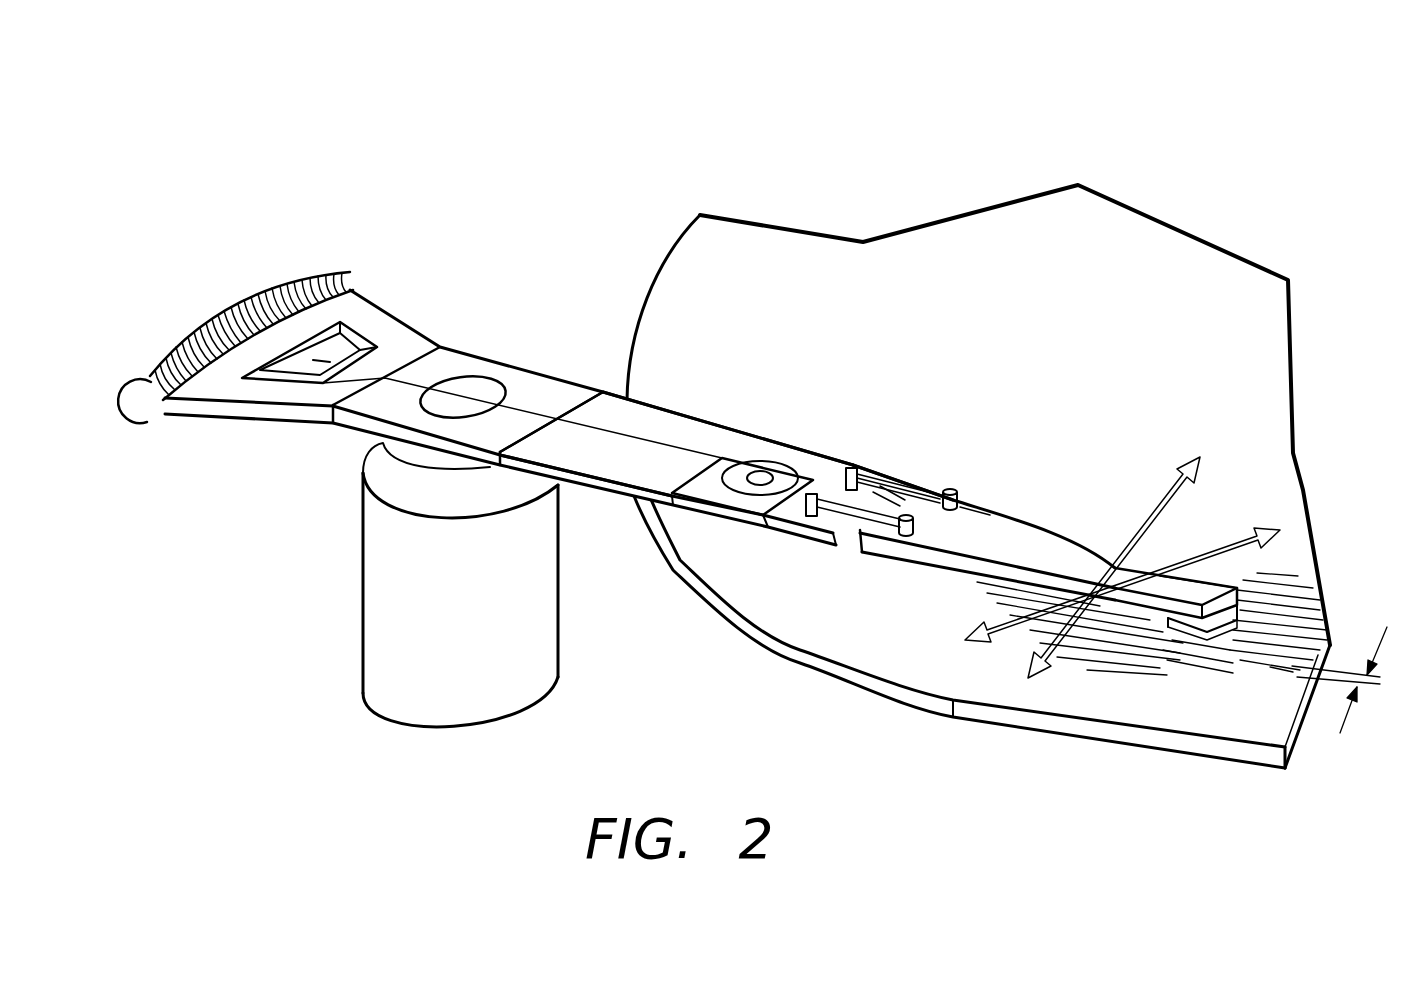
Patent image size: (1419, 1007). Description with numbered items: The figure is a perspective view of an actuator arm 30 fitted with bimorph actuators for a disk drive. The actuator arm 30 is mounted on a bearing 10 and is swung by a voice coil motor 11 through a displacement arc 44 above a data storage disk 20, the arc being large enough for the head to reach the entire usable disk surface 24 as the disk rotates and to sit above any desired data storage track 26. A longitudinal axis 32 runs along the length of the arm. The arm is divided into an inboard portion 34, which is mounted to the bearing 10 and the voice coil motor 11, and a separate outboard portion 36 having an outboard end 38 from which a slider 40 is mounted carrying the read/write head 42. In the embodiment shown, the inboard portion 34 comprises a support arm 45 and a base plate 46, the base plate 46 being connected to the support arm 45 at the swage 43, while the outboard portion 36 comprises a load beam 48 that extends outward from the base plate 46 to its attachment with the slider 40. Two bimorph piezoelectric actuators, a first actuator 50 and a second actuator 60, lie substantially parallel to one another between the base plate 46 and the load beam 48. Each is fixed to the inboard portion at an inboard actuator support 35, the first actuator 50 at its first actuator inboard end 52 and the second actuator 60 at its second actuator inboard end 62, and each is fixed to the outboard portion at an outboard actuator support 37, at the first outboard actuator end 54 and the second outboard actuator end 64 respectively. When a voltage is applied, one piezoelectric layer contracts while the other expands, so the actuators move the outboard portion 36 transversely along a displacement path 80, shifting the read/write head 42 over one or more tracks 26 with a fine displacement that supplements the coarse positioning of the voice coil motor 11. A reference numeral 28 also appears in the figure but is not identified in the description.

The bearing 10 is at (383, 447).
The voice coil motor 11 is at (222, 307).
The data storage disk 20 is at (818, 278).
The disk surface 24 is at (875, 652).
The data storage track 26 is at (1270, 670).
The disk thickness 28 is at (1386, 683).
The actuator arm 30 is at (585, 265).
The longitudinal axis 32 is at (420, 385).
The inboard portion 34 is at (658, 477).
The inboard actuator support 35 is at (860, 466).
The outboard portion 36 is at (1067, 552).
The outboard actuator support 37 is at (965, 506).
The outboard end 38 is at (1210, 590).
The slider 40 is at (1166, 624).
The read/write head 42 is at (1220, 626).
The swage 43 is at (762, 472).
The displacement arc 44 is at (1196, 458).
The support arm 45 is at (615, 400).
The base plate 46 is at (707, 492).
The load beam 48 is at (1133, 571).
The first actuator 50 is at (845, 522).
The first actuator inboard end 52 is at (806, 512).
The first outboard actuator end 54 is at (902, 537).
The second actuator 60 is at (903, 472).
The second actuator inboard end 62 is at (878, 466).
The second outboard actuator end 64 is at (945, 488).
The displacement path 80 is at (1275, 528).